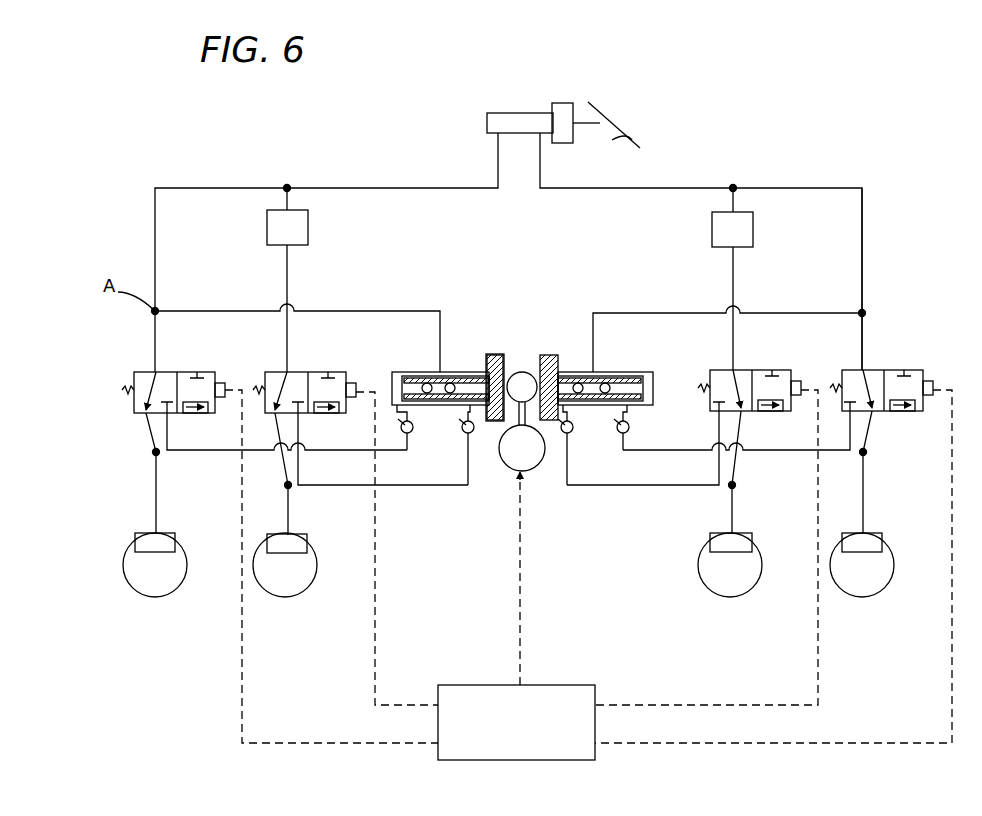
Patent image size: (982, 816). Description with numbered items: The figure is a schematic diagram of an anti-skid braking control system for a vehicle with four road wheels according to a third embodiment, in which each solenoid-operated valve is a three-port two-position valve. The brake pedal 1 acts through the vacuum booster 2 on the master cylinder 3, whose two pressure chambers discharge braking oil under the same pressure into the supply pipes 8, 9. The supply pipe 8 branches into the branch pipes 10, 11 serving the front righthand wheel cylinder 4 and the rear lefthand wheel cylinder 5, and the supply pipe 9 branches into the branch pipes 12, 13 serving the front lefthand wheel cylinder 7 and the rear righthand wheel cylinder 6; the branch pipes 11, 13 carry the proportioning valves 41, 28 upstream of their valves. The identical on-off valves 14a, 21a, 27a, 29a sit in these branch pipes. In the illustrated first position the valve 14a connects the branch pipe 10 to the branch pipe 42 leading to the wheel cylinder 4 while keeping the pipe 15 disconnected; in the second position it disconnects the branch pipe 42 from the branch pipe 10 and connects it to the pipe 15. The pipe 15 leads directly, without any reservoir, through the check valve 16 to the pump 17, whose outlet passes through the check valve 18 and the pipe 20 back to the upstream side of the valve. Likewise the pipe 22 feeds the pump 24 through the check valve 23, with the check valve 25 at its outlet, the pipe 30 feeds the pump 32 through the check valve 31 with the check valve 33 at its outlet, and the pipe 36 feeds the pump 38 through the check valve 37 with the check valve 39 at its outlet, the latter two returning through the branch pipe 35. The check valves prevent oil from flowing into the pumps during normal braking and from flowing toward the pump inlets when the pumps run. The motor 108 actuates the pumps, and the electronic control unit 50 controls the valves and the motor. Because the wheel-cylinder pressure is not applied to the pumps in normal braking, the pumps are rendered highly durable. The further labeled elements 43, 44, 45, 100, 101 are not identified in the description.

The brake pedal 1 is at (612, 124).
The vacuum booster 2 is at (564, 104).
The master cylinder 3 is at (521, 113).
The wheel cylinder 4 is at (176, 541).
The wheel cylinder 5 is at (308, 542).
The wheel cylinder 6 is at (753, 541).
The wheel cylinder 7 is at (883, 541).
The supply pipe 8 is at (410, 188).
The supply pipe 9 is at (660, 188).
The branch pipe 10 is at (205, 188).
The branch pipe 11 is at (292, 200).
The branch pipe 12 is at (800, 188).
The branch pipe 13 is at (730, 202).
The solenoid-operated on-off valve 14a is at (136, 421).
The pipe 15 is at (194, 451).
The check valve 16 is at (413, 432).
The pump 17 is at (392, 384).
The check valve 18 is at (420, 378).
The pipe 20 is at (185, 311).
The solenoid-operated on-off valve 21a is at (313, 414).
The pipe 22 is at (416, 486).
The check valve 23 is at (472, 432).
The pump 24 is at (500, 352).
The check valve 25 is at (462, 368).
The solenoid-operated on-off valve 27a is at (903, 413).
The proportioning valve 28 is at (753, 227).
The solenoid-operated valve 29a is at (706, 414).
The pipe 30 is at (790, 451).
The check valve 31 is at (631, 429).
The pump 32 is at (646, 380).
The check valve 33 is at (612, 376).
The branch pipe 35 is at (782, 313).
The pipe 36 is at (656, 486).
The check valve 37 is at (572, 432).
The pump 38 is at (530, 356).
The check valve 39 is at (574, 372).
The proportioning valve 41 is at (267, 230).
The branch pipe 42 is at (154, 454).
The junction 43 is at (286, 488).
The junction 44 is at (735, 488).
The wheel brake line 45 is at (866, 480).
The electronic control unit 50 is at (596, 685).
The first pump unit 100 is at (424, 350).
The second pump unit 101 is at (616, 346).
The motor 108 is at (512, 471).